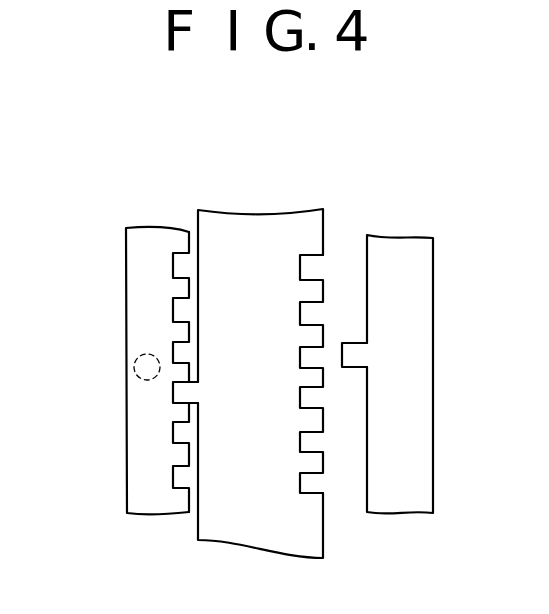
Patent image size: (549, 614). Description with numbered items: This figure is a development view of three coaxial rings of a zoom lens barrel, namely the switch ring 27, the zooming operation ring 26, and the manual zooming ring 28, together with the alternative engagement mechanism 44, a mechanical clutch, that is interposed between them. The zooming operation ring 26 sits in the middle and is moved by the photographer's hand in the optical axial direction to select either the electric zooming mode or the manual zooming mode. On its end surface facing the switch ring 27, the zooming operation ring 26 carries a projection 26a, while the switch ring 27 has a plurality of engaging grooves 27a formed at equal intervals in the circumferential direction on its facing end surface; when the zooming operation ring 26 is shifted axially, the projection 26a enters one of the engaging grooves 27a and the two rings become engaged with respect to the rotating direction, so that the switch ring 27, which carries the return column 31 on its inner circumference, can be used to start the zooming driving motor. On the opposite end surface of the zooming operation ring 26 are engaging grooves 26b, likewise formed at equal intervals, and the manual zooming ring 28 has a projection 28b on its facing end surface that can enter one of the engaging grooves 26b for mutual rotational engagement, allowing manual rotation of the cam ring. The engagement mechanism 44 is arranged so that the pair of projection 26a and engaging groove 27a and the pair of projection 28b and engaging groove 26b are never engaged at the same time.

The alternative engagement mechanism 44 is at (188, 176).
The switch ring 27 is at (141, 243).
The engaging grooves 27a is at (171, 437).
The return column 31 is at (140, 357).
The zooming operation ring 26 is at (274, 243).
The projection 26a is at (170, 390).
The engaging grooves 26b is at (318, 481).
The manual zooming ring 28 is at (408, 256).
The projection 28b is at (354, 350).